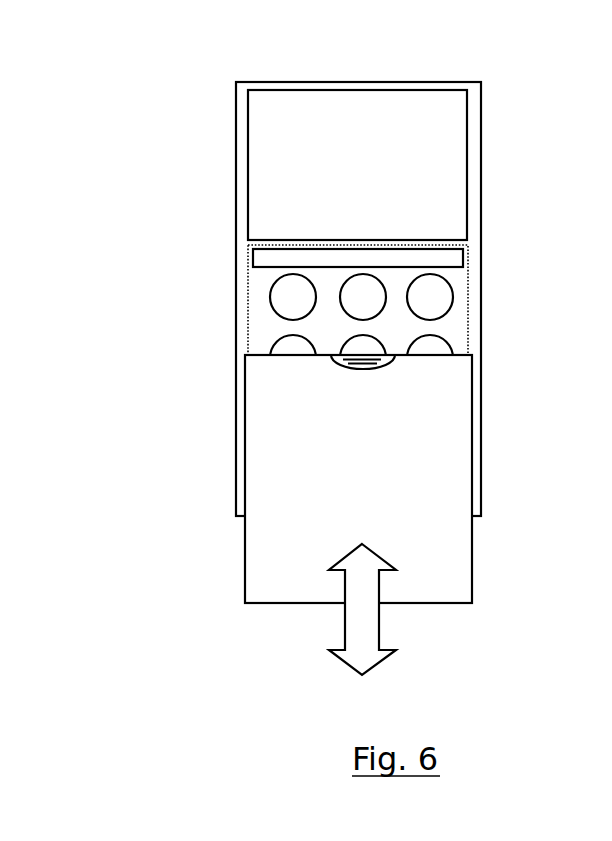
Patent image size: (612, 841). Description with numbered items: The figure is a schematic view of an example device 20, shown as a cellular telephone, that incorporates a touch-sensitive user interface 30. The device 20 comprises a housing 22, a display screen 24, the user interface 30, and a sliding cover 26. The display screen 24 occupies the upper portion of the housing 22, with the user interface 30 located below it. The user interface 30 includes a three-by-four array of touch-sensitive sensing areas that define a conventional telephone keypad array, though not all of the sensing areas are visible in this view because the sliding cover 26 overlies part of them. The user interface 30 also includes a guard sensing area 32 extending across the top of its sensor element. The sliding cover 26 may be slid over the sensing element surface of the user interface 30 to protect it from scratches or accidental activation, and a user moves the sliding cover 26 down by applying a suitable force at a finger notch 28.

The device 20 is at (125, 86).
The housing 22 is at (236, 127).
The display screen 24 is at (338, 102).
The sliding cover 26 is at (245, 575).
The finger notch 28 is at (352, 370).
The user interface 30 is at (355, 367).
The guard sensing area 32 is at (463, 255).